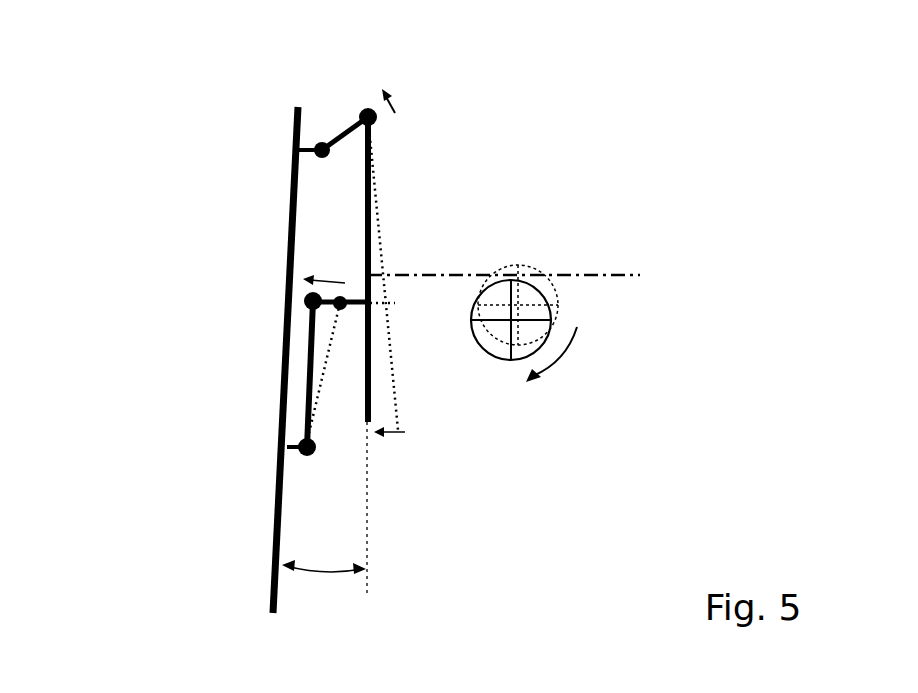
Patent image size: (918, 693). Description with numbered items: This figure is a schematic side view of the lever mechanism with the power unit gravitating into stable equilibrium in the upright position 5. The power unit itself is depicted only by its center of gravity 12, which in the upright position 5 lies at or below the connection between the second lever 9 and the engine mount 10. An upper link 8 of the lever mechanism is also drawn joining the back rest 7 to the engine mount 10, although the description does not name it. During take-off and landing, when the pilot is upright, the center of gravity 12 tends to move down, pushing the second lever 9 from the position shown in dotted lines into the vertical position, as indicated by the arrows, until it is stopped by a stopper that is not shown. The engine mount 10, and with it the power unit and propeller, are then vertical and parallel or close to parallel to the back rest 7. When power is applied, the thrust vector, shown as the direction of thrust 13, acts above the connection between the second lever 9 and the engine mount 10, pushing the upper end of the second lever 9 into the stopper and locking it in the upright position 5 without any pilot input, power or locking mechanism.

The upright position 5 is at (324, 520).
The back rest 7 is at (285, 172).
The upper link 8 is at (337, 120).
The second lever 9 is at (325, 376).
The engine mount 10 is at (349, 243).
The center of gravity 12 is at (499, 323).
The direction of thrust 13 is at (535, 275).